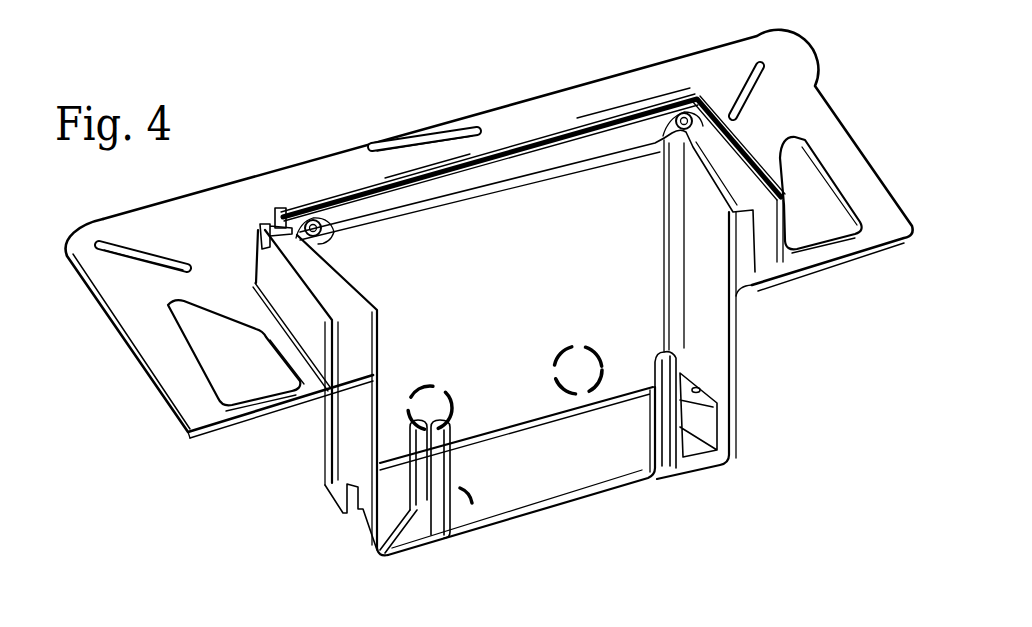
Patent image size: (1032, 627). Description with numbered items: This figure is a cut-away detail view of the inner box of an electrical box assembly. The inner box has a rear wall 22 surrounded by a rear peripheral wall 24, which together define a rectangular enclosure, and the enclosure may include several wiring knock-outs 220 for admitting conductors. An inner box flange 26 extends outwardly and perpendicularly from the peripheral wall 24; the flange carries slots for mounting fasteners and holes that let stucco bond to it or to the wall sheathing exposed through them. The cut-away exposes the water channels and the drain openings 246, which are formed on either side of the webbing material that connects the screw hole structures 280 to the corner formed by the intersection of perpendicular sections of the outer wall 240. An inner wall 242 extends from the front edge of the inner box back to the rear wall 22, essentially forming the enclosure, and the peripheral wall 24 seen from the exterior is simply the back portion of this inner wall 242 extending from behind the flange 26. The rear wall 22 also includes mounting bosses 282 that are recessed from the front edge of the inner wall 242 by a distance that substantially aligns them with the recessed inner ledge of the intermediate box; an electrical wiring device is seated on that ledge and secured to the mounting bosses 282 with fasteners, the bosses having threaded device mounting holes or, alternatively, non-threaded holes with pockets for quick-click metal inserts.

The rear wall 22 is at (598, 470).
The rear peripheral wall 24 is at (737, 346).
The inner box flange 26 is at (489, 247).
The wiring knock-outs 220 is at (562, 382).
The outer wall 240 is at (327, 352).
The inner wall 242 is at (384, 322).
The drain openings 246 is at (270, 208).
The screw hole structures 280 is at (322, 235).
The mounting bosses 282 is at (660, 428).